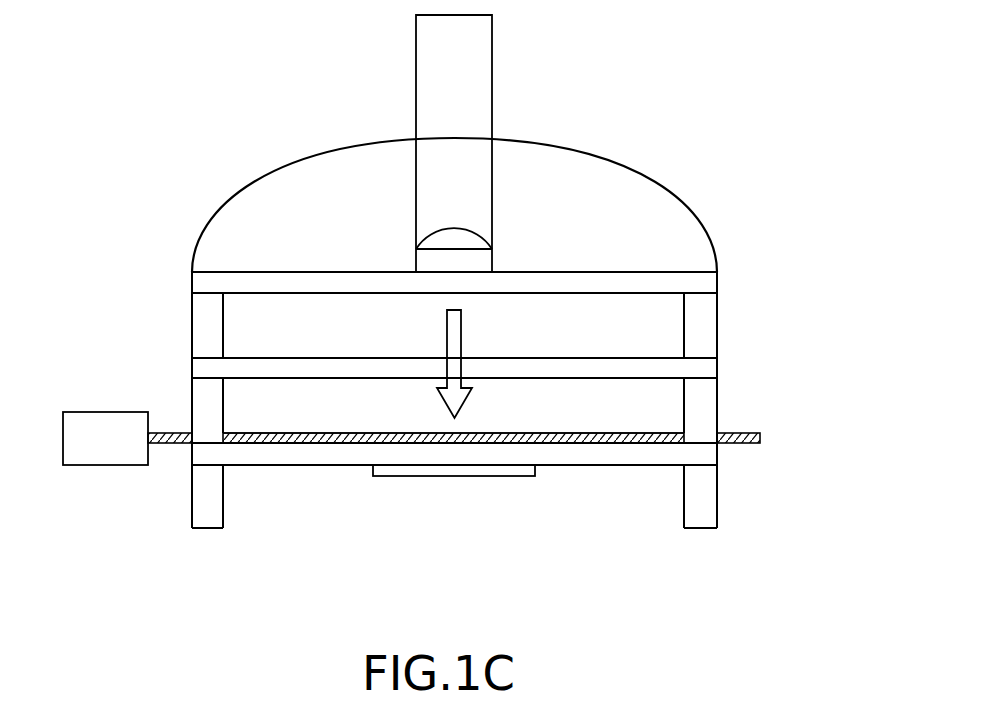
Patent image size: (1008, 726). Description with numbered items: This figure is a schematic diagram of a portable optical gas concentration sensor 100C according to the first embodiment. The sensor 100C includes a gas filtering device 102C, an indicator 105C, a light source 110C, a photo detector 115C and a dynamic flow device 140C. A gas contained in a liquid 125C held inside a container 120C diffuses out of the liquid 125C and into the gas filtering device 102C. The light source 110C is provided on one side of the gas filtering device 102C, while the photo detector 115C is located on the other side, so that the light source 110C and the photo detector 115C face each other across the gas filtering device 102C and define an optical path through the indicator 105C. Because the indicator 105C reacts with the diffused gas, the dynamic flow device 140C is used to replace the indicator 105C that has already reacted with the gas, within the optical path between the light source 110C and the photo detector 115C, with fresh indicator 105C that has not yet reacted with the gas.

The portable optical gas concentration sensor 100C is at (285, 162).
The light source 110C is at (475, 105).
The container 120C is at (718, 322).
The liquid 125C is at (250, 342).
The indicator 105C is at (638, 433).
The gas filtering device 102C is at (250, 433).
The dynamic flow device 140C is at (130, 451).
The photo detector 115C is at (453, 477).